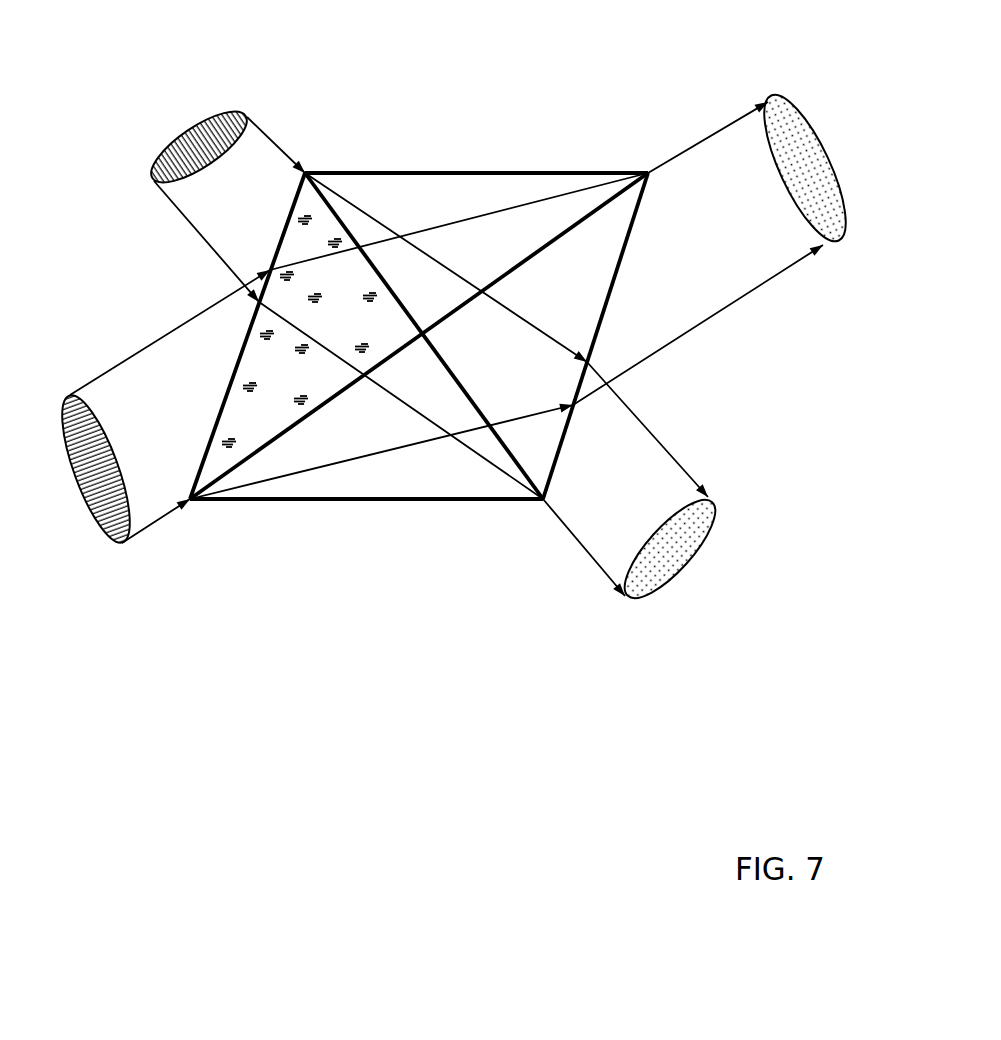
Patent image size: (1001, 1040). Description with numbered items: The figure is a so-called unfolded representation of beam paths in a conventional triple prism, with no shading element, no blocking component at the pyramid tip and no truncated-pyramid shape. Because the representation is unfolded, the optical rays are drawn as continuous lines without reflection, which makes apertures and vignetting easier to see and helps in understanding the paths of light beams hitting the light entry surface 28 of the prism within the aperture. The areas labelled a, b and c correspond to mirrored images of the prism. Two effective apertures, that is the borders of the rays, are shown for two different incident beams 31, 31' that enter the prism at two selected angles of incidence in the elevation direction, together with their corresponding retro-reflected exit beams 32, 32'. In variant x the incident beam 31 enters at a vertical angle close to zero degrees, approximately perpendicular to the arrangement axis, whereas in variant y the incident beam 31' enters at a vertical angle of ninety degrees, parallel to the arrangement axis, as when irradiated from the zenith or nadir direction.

The light entry surface 28 is at (419, 386).
The incident beam 31 is at (188, 165).
The incident beam 31' is at (142, 454).
The retro-reflected exit beam 32 is at (677, 496).
The retro-reflected exit beam 32' is at (724, 228).